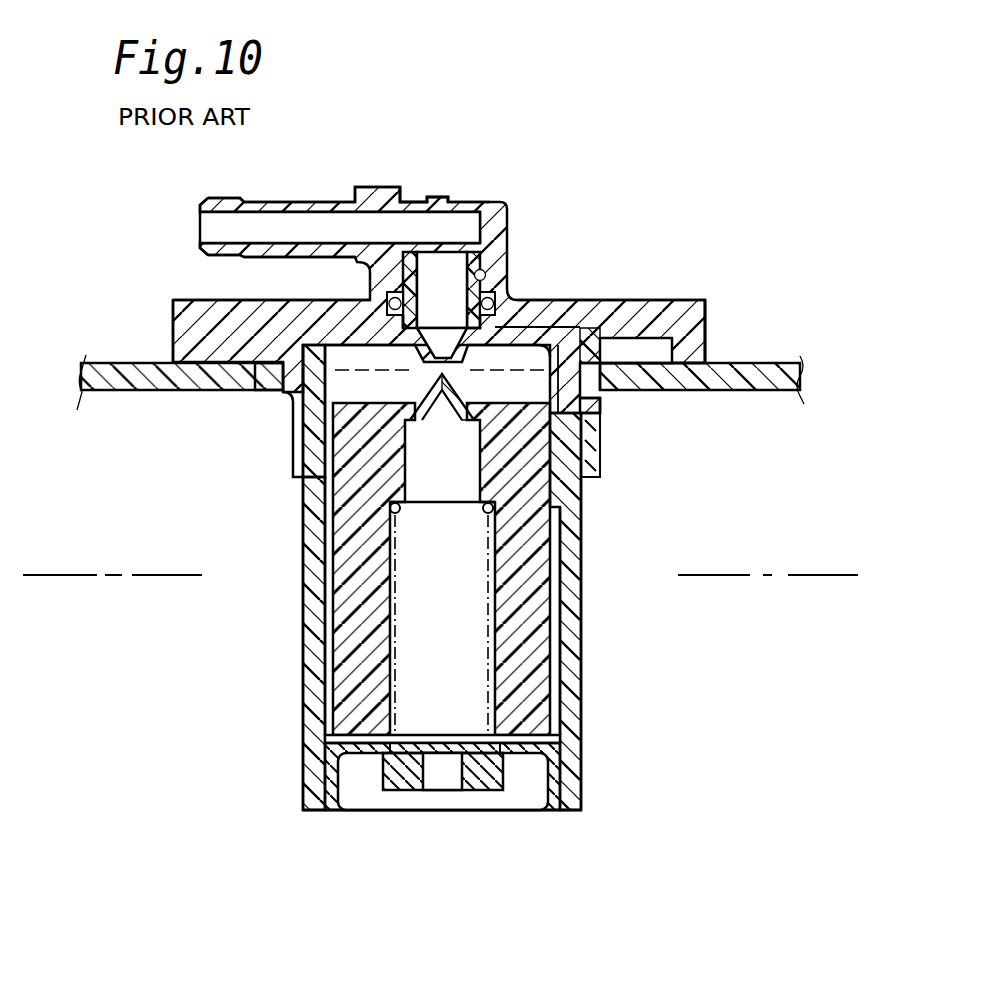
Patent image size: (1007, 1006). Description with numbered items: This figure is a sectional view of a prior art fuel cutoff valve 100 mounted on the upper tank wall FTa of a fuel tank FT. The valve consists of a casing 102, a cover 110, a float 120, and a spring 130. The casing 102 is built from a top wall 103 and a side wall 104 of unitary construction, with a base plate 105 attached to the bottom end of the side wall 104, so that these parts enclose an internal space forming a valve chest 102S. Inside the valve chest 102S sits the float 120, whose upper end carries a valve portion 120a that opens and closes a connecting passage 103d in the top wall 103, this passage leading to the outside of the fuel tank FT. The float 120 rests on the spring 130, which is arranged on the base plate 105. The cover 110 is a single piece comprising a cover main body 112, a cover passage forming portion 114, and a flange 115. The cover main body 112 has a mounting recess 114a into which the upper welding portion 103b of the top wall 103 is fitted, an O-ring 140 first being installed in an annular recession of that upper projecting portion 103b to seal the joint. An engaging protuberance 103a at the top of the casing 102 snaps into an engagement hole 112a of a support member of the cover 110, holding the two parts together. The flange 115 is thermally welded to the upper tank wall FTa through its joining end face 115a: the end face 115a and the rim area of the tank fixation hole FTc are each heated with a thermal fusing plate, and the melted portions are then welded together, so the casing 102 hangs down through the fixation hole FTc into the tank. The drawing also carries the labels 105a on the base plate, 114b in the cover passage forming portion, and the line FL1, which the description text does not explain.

The fuel cutoff valve 100 is at (633, 133).
The casing 102 is at (187, 418).
The valve chest 102S is at (552, 618).
The top wall 103 is at (333, 405).
The engaging protuberance 103a is at (584, 422).
The upper welding portion 103b is at (490, 322).
The connecting passage 103d is at (442, 267).
The side wall 104 is at (308, 523).
The base plate 105 is at (333, 795).
The cap opening 105a is at (445, 790).
The cover 110 is at (427, 187).
The cover main body 112 is at (495, 224).
The engagement hole 112a is at (592, 410).
The cover passage forming portion 114 is at (324, 205).
The mounting recess 114a is at (486, 273).
The fuel passage of pipe 114b is at (257, 225).
The flange 115 is at (632, 322).
The joining end face 115a is at (683, 353).
The float 120 is at (552, 688).
The valve portion 120a is at (464, 389).
The spring 130 is at (490, 650).
The O-ring 140 is at (389, 302).
The fuel tank FT is at (793, 357).
The upper tank wall FTa is at (740, 357).
The tank fixation hole FTc is at (685, 352).
The fuel level FL1 is at (788, 574).